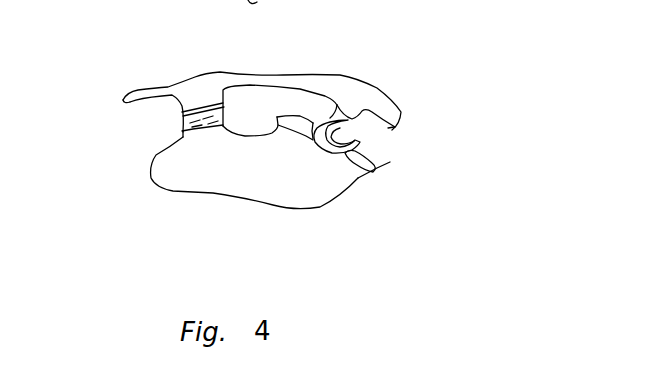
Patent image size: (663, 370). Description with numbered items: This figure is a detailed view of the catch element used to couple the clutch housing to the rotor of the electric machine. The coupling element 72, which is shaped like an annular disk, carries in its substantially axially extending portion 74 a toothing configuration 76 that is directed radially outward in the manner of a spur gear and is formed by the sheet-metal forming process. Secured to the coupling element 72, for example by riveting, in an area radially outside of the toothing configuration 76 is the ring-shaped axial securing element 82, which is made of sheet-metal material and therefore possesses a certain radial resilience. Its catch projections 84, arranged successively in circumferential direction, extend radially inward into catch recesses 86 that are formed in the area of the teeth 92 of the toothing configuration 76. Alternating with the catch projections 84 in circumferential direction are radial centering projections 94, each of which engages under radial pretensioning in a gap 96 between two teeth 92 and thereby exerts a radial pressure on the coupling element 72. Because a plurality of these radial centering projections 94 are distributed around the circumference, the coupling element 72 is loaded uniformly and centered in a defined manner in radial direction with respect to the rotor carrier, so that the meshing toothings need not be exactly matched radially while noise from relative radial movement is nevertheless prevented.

The coupling element 72 is at (320, 208).
The axially extending portion 74 is at (377, 172).
The toothing configuration 76 is at (277, 117).
The axial securing element 82 is at (385, 90).
The catch projections 84 is at (181, 109).
The catch recesses 86 is at (183, 135).
The teeth 92 is at (310, 124).
The radial centering projections 94 is at (340, 134).
The gap 96 is at (377, 168).